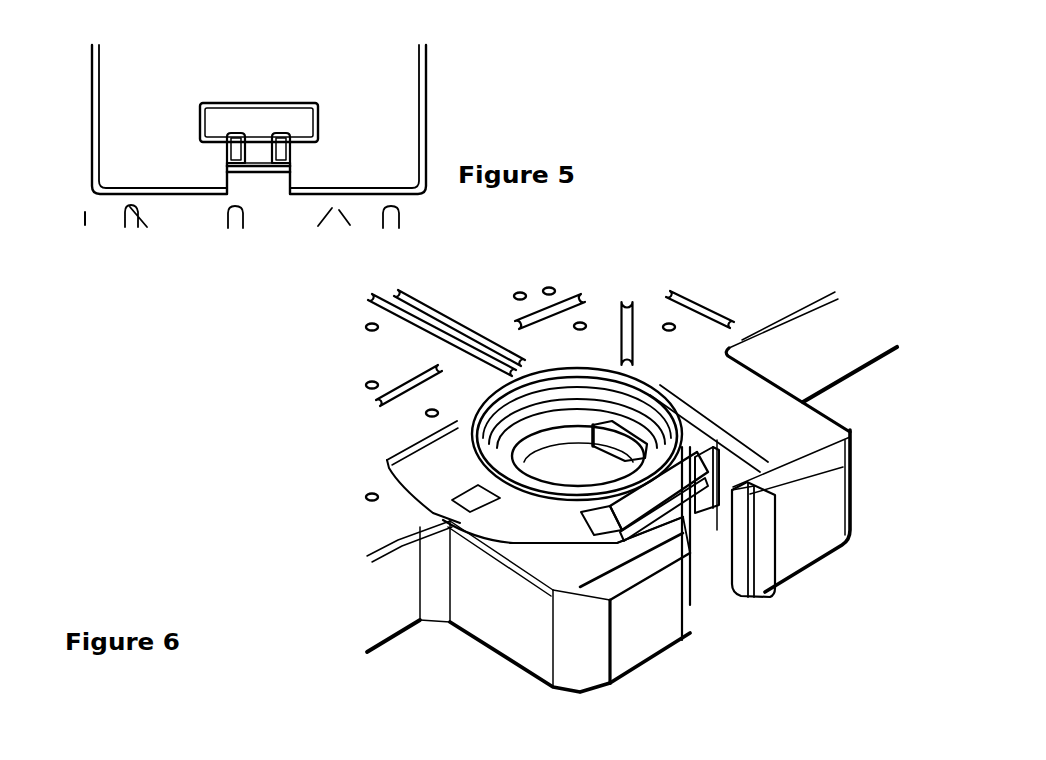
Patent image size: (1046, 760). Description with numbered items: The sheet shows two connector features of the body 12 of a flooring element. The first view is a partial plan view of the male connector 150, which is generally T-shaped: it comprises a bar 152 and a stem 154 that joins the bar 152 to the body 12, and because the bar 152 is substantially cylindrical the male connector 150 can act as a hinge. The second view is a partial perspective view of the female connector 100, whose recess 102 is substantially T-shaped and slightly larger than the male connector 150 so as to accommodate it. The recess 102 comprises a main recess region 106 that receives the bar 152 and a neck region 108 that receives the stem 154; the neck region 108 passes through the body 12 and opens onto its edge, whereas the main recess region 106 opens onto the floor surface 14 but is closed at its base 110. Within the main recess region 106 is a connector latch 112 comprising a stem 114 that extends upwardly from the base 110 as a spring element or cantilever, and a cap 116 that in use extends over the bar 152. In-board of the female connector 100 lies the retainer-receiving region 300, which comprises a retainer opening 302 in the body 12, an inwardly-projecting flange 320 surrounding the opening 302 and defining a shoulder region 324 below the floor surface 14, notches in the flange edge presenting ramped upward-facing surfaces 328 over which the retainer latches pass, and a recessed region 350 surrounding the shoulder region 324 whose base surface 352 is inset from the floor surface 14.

In FIG. 5, the body 12 is at (168, 215).
In FIG. 6, the body 12 is at (487, 312).
In FIG. 6, the floor surface 14 is at (385, 523).
In FIG. 6, the female connector 100 is at (533, 508).
In FIG. 6, the recess 102 is at (728, 460).
In FIG. 6, the main recess region 106 is at (712, 532).
In FIG. 6, the neck region 108 is at (732, 605).
In FIG. 6, the base 110 is at (698, 587).
In FIG. 6, the connector latch 112 is at (650, 512).
In FIG. 6, the stem 114 is at (687, 522).
In FIG. 6, the cap 116 is at (700, 483).
In FIG. 5, the male connector 150 is at (262, 103).
In FIG. 5, the bar 152 is at (237, 103).
In FIG. 5, the stem 154 is at (228, 155).
In FIG. 6, the retainer-receiving region 300 is at (588, 368).
In FIG. 6, the retainer opening 302 is at (568, 488).
In FIG. 6, the flange 320 is at (522, 427).
In FIG. 6, the shoulder region 324 is at (531, 407).
In FIG. 6, the ramped upward-facing surface 328 is at (623, 443).
In FIG. 6, the recessed region 350 is at (418, 448).
In FIG. 6, the base surface 352 is at (433, 492).